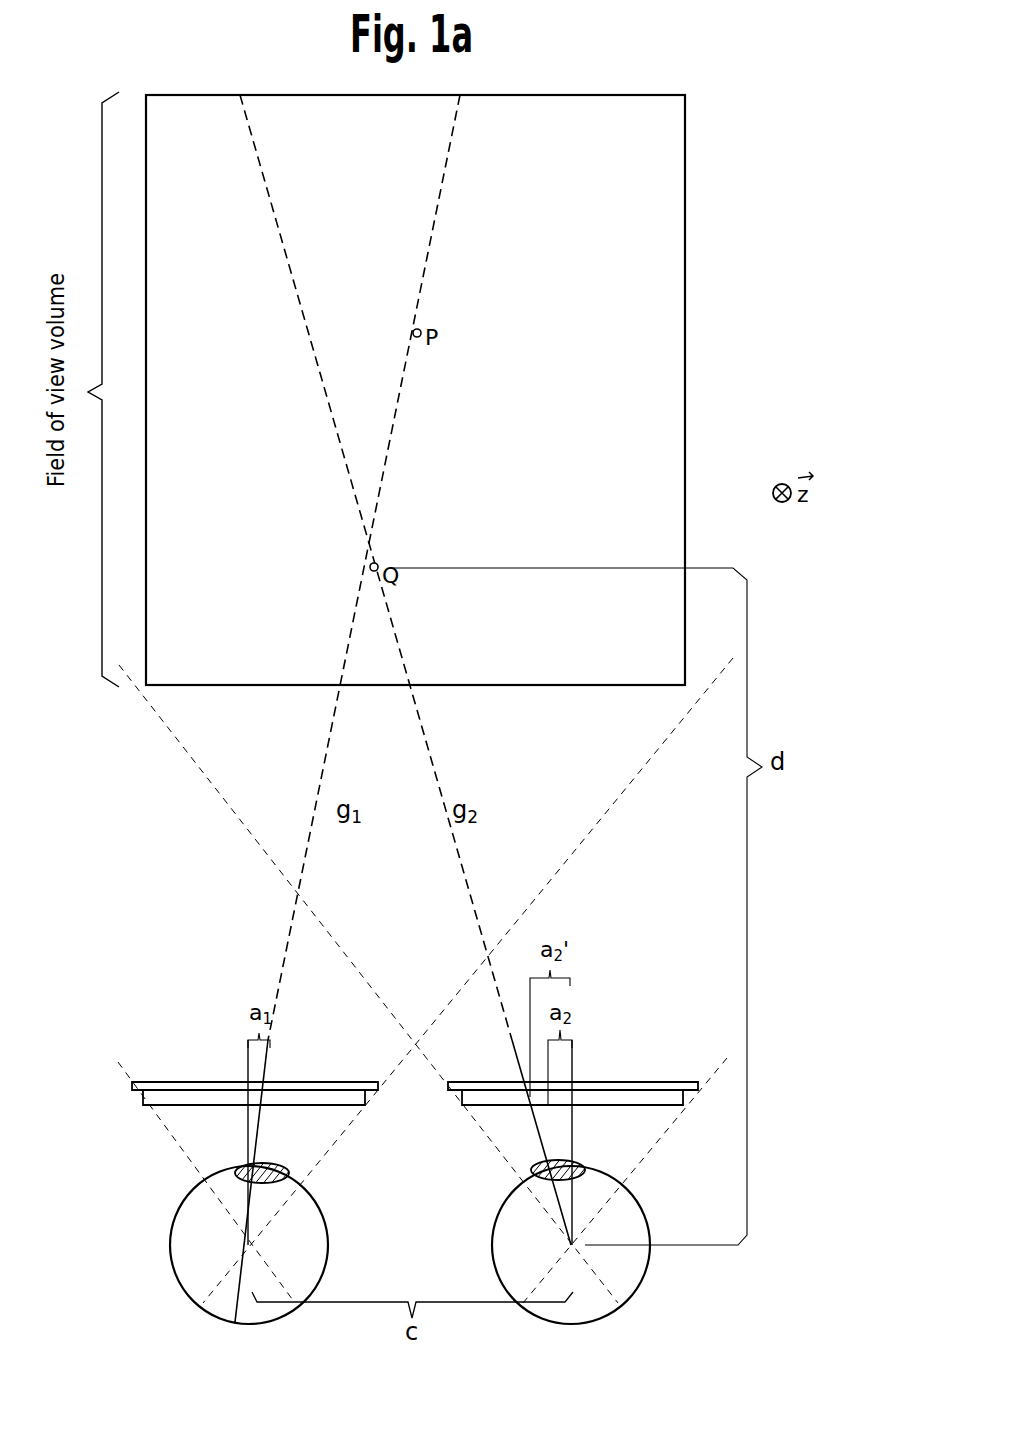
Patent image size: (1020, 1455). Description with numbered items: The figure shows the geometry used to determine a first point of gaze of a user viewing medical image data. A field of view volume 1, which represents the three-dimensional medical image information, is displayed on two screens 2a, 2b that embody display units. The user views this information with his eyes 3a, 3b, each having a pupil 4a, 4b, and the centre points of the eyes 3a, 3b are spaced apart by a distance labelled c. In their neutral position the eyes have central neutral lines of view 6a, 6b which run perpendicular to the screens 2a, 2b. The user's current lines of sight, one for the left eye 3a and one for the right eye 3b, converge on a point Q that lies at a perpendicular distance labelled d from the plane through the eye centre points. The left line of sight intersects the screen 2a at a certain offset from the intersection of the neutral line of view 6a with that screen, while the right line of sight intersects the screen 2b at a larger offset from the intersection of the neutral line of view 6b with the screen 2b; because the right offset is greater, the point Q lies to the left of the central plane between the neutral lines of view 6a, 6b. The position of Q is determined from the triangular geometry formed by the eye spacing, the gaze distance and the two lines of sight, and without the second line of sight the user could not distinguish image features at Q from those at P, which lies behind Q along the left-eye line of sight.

The field of view volume 1 is at (685, 235).
The screen 2a is at (197, 1082).
The screen 2b is at (620, 1082).
The left eye 3a is at (172, 1262).
The right eye 3b is at (650, 1267).
The pupil 4a is at (285, 1167).
The pupil 4b is at (536, 1166).
The neutral line of view 6a is at (248, 1140).
The neutral line of view 6b is at (572, 1138).